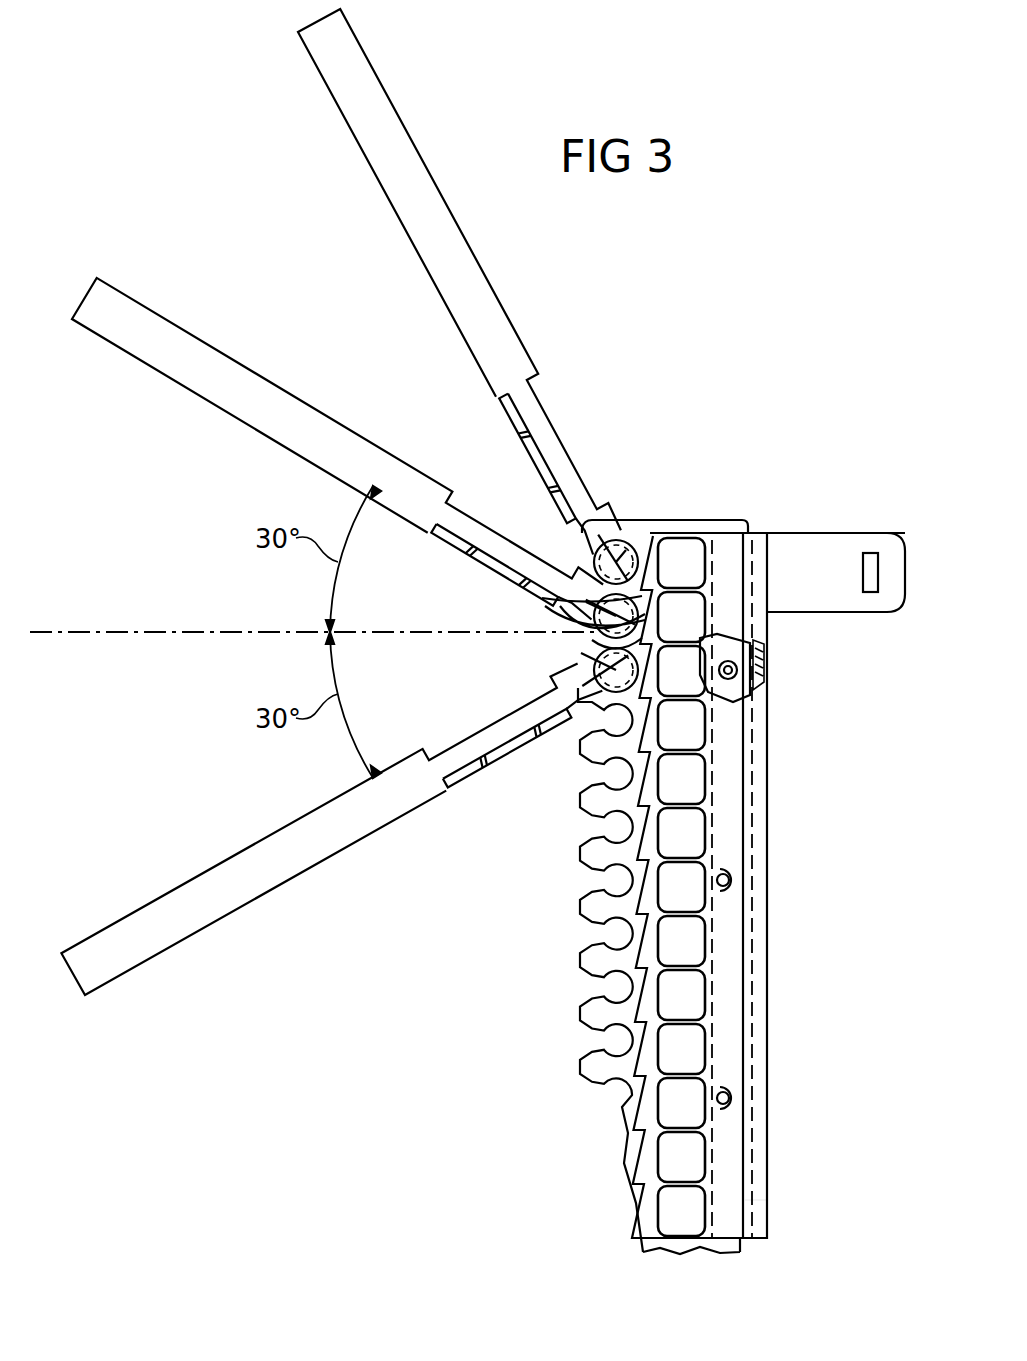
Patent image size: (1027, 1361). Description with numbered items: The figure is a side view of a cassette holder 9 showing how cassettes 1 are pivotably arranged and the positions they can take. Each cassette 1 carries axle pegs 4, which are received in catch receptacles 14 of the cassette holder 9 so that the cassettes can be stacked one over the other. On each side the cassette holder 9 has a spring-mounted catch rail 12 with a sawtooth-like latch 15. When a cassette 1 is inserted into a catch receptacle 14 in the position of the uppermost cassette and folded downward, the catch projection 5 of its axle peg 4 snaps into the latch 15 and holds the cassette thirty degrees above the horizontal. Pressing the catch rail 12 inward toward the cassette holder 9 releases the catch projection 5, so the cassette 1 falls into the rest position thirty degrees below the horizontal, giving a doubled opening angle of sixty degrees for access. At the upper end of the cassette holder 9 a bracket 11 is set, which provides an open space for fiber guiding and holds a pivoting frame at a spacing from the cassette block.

The cassette 1 is at (362, 186).
The axle peg 4 is at (626, 540).
The catch projection 5 is at (572, 610).
The cassette holder 9 is at (706, 526).
The bracket 11 is at (820, 555).
The catch rail 12 is at (722, 1196).
The catch receptacle 14 is at (606, 938).
The sawtooth-like latch 15 is at (585, 757).